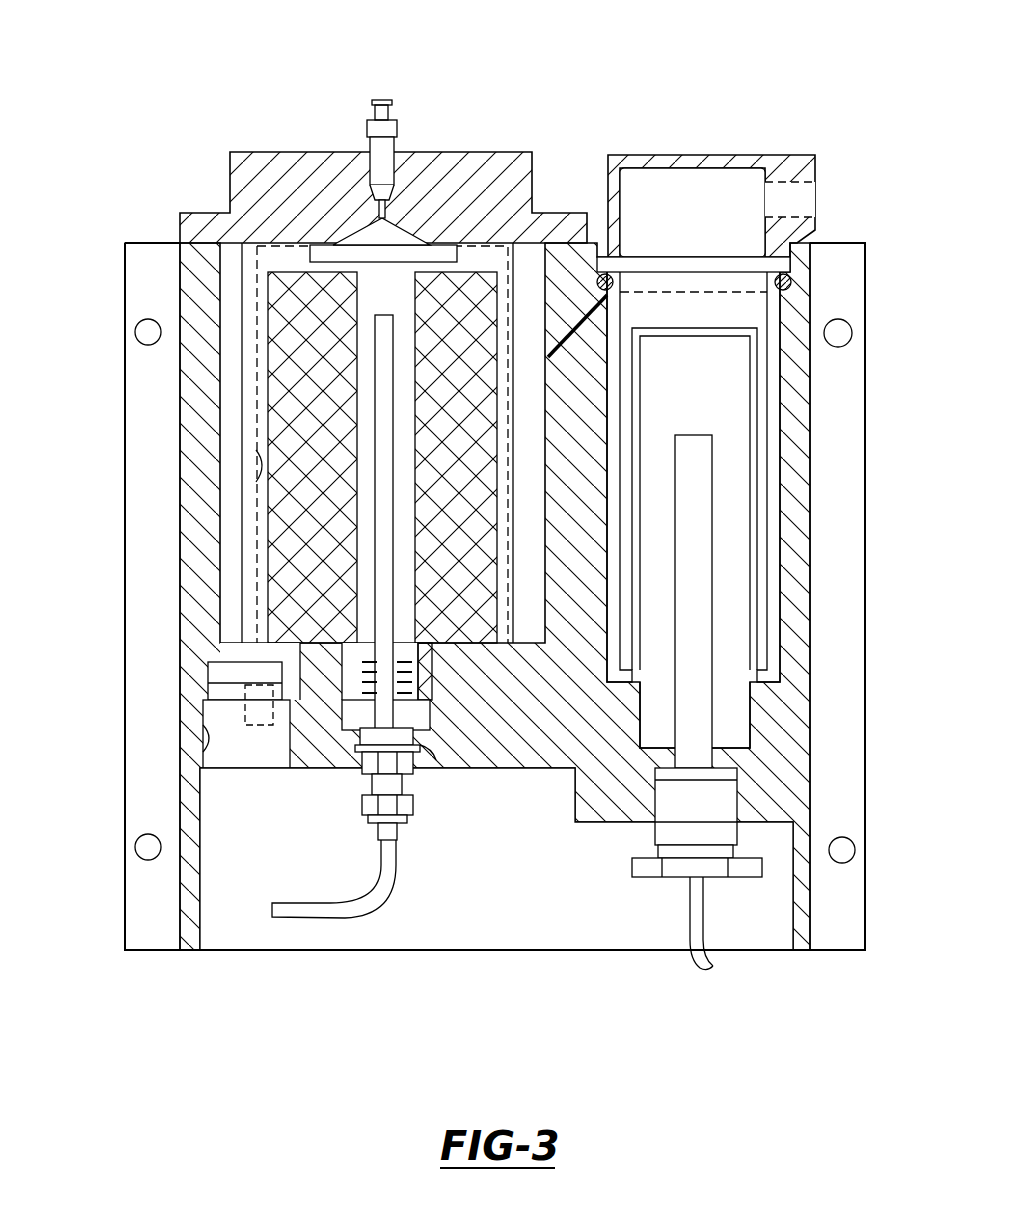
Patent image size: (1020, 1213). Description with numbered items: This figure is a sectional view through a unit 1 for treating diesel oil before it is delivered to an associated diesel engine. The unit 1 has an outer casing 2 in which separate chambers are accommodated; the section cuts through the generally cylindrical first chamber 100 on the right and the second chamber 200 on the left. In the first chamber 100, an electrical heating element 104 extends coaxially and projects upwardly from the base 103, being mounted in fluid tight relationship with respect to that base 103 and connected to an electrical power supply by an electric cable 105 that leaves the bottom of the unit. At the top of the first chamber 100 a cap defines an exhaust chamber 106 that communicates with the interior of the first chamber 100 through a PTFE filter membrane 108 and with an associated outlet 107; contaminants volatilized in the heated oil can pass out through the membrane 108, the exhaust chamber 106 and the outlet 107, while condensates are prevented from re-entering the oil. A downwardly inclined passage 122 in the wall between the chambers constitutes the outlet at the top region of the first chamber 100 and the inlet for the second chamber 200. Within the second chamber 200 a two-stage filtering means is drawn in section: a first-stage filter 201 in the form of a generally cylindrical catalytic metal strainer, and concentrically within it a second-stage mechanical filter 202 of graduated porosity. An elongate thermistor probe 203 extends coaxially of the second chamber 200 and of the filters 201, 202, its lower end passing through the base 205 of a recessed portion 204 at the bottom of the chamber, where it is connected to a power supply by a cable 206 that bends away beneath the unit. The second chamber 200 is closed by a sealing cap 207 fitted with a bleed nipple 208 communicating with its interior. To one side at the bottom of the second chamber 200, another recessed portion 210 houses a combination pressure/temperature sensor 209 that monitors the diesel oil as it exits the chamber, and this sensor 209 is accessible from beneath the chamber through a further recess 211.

The unit 1 is at (812, 112).
The outer casing 2 is at (845, 580).
The first chamber 100 is at (741, 559).
The base 103 is at (655, 742).
The electrical heating element 104 is at (700, 727).
The electric cable 105 is at (692, 925).
The exhaust chamber 106 is at (648, 183).
The outlet 107 is at (805, 203).
The PTFE filter membrane 108 is at (705, 293).
The downwardly inclined passage 122 is at (570, 345).
The second chamber 200 is at (222, 545).
The first-stage filter 201 is at (257, 478).
The second-stage mechanical filter 202 is at (278, 390).
The thermistor probe 203 is at (383, 655).
The recessed portion 204 is at (348, 730).
The base 205 is at (432, 745).
The cable 206 is at (330, 910).
The sealing cap 207 is at (270, 152).
The bleed nipple 208 is at (386, 143).
The combination pressure/temperature sensor 209 is at (250, 677).
The recessed portion 210 is at (228, 650).
The further recess 211 is at (205, 748).